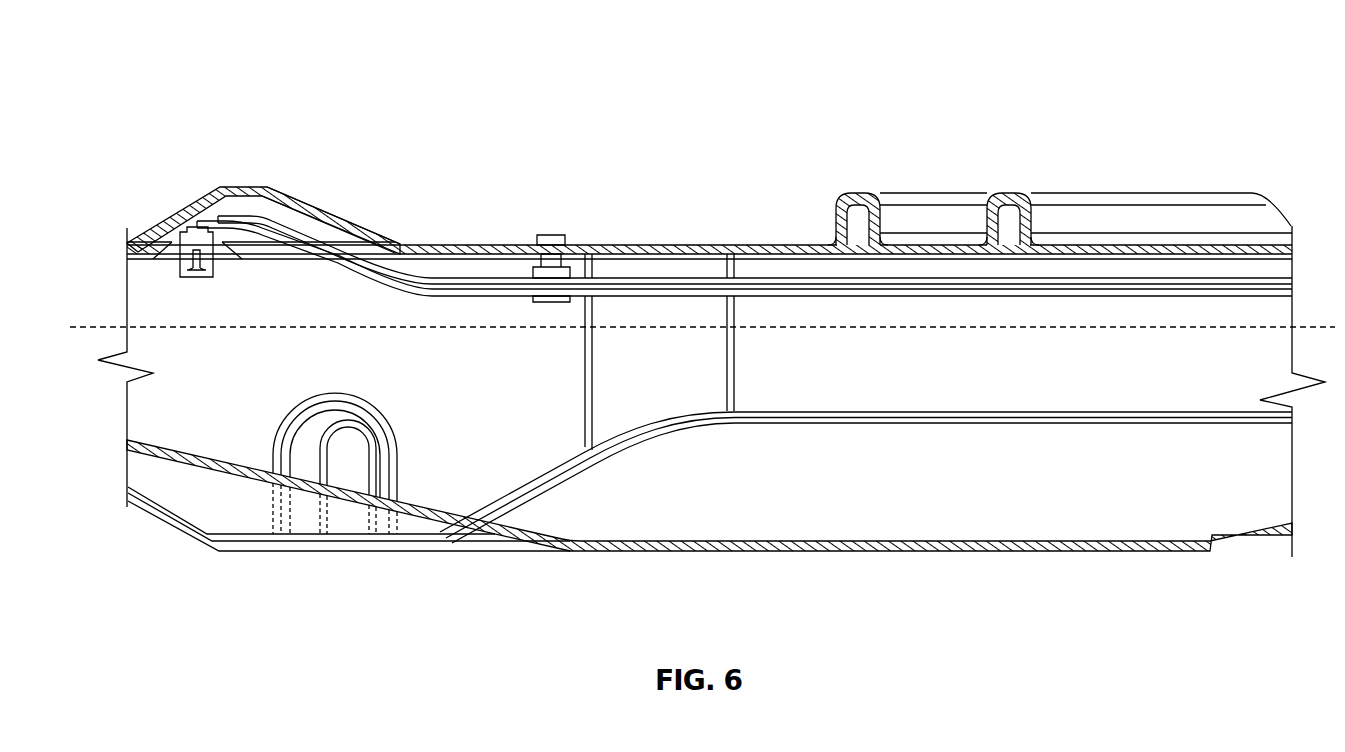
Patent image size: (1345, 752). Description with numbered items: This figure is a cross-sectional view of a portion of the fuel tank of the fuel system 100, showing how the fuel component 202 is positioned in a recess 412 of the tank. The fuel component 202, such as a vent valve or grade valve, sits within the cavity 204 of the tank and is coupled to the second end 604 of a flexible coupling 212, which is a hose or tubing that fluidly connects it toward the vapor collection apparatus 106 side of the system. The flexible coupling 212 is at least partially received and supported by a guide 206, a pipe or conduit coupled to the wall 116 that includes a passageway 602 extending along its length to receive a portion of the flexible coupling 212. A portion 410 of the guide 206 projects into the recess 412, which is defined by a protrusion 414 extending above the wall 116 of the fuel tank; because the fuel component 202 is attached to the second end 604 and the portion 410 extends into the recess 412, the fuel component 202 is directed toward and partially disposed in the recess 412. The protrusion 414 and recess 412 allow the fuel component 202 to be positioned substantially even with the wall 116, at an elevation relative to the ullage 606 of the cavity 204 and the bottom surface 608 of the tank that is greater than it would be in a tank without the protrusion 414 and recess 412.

The fuel system 100 is at (1237, 92).
The vapor collection apparatus 106 is at (656, 552).
The wall 116 is at (438, 247).
The fuel component 202 is at (189, 236).
The cavity 204 is at (438, 487).
The guide 206 is at (603, 277).
The flexible coupling 212 is at (707, 280).
The portion of the guide 410 is at (343, 267).
The recess 412 is at (265, 210).
The protrusion 414 is at (243, 187).
The passageway 602 is at (762, 280).
The second end of the flexible coupling 604 is at (250, 220).
The ullage 606 is at (87, 328).
The bottom surface 608 is at (830, 540).